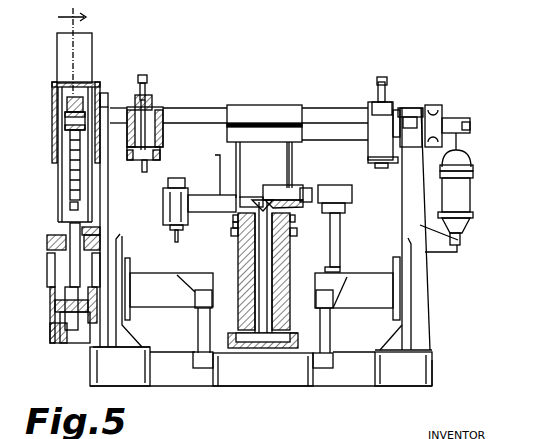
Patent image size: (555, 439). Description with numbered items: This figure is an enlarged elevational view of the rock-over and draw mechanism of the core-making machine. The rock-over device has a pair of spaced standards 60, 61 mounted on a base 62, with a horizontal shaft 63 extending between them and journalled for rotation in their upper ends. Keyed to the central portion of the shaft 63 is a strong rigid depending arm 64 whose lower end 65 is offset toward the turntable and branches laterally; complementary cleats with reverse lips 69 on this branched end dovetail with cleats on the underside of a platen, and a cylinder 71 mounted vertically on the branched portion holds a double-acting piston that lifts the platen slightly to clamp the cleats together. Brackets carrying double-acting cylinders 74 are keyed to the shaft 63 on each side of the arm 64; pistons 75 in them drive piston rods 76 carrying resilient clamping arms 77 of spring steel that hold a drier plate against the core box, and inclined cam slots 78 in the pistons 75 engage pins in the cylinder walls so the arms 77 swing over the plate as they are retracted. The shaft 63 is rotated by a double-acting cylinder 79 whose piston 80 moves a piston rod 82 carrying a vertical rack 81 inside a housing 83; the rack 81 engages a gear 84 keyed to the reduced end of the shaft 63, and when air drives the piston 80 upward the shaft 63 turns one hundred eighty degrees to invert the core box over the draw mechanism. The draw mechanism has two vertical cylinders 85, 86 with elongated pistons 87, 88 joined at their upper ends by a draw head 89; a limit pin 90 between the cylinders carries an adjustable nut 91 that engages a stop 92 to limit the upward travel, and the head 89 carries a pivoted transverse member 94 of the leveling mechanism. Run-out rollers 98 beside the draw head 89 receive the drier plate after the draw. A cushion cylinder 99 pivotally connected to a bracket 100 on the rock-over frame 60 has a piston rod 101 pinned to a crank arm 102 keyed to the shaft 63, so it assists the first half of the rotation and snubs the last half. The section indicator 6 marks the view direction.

The section line / direction arrow 6 is at (68, 157).
The standard 60 is at (415, 295).
The standard 61 is at (110, 105).
The base 62 is at (432, 367).
The shaft 63 is at (323, 115).
The depending arm 64 is at (291, 160).
The lower end 65 is at (210, 168).
The reverse lip 69 is at (186, 179).
The cylinder 71 is at (163, 210).
The double-acting cylinder 74 is at (160, 152).
The piston 75 is at (156, 143).
The piston rod 76 is at (150, 93).
The resilient clamping arm 77 is at (147, 80).
The cam slot 78 is at (145, 166).
The double-acting cylinder 79 is at (50, 282).
The piston 80 is at (58, 304).
The rack 81 is at (70, 195).
The piston rod 82 is at (72, 248).
The housing 83 is at (55, 92).
The gear 84 is at (68, 110).
The cylinder 85 is at (240, 259).
The cylinder 86 is at (290, 257).
The piston 87 is at (242, 328).
The piston 88 is at (283, 321).
The draw head 89 is at (295, 220).
The limit pin 90 is at (238, 285).
The nut 91 is at (268, 335).
The stop 92 is at (236, 238).
The transverse member 94 is at (250, 197).
The run-out rollers 98 is at (337, 185).
The cushion cylinder 99 is at (471, 192).
The bracket 100 is at (440, 248).
The piston rod 101 is at (465, 140).
The crank arm 102 is at (440, 117).